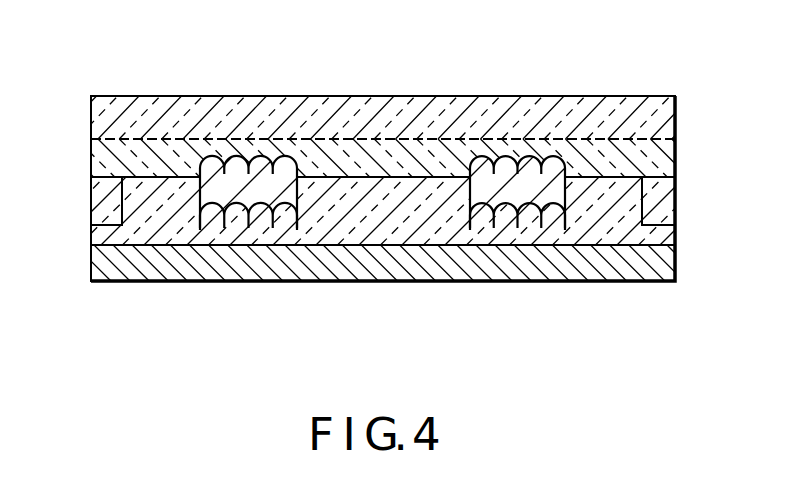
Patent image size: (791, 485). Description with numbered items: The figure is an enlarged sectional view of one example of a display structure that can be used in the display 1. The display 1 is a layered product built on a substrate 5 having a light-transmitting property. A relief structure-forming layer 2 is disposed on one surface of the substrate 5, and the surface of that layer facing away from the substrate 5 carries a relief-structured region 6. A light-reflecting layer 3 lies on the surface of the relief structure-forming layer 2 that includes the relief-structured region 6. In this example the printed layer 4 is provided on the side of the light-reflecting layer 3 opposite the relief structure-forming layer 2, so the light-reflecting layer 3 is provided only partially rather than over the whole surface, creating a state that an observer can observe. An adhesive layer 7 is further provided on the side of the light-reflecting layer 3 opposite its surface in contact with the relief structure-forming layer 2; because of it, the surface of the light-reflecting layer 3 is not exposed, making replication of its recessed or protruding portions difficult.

The display 1 is at (402, 179).
The relief structure-forming layer 2 is at (675, 157).
The light-reflecting layer 3 is at (100, 196).
The printed layer 4 is at (183, 281).
The substrate 5 is at (675, 105).
The relief-structured region 6 is at (528, 170).
The adhesive layer 7 is at (340, 240).